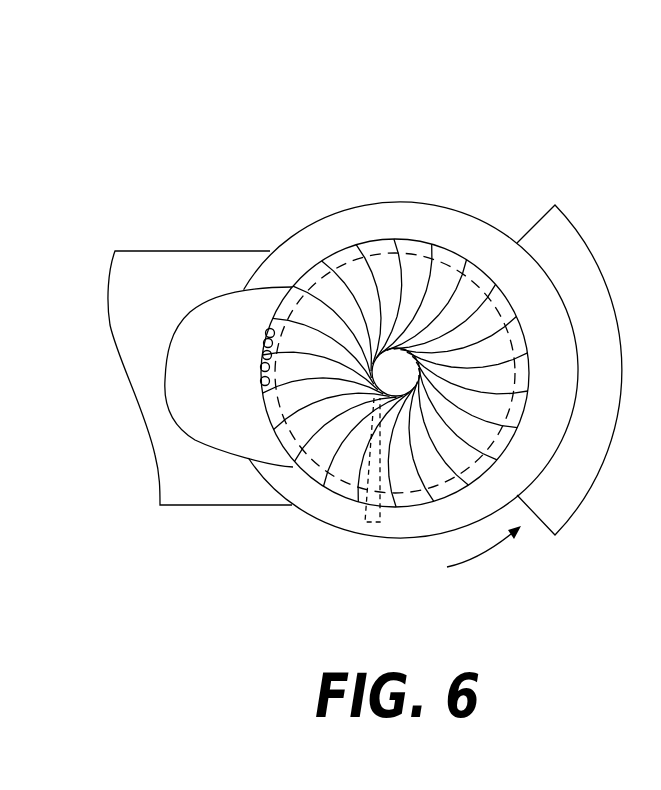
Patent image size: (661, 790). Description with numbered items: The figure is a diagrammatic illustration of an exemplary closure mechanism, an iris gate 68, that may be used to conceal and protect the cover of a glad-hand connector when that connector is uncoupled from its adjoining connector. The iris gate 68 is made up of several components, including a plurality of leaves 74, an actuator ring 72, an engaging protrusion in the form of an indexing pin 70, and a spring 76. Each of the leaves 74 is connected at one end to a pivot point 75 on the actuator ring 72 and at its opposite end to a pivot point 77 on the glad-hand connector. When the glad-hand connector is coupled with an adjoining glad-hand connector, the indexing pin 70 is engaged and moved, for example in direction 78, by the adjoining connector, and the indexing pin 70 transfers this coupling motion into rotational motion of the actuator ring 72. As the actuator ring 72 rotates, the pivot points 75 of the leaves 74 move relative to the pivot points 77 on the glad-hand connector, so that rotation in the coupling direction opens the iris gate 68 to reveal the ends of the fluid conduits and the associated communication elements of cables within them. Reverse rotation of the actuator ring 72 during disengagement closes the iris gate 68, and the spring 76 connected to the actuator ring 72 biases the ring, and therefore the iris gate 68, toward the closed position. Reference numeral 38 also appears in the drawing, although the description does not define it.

The iris gate 68 is at (357, 142).
The housing 38 is at (495, 240).
The actuator ring 72 is at (408, 253).
The leaves 74 is at (369, 269).
The pivot point 75 is at (495, 290).
The spring 76 is at (264, 347).
The indexing pin 70 is at (263, 379).
The pivot point 77 is at (372, 518).
The direction 78 is at (488, 552).